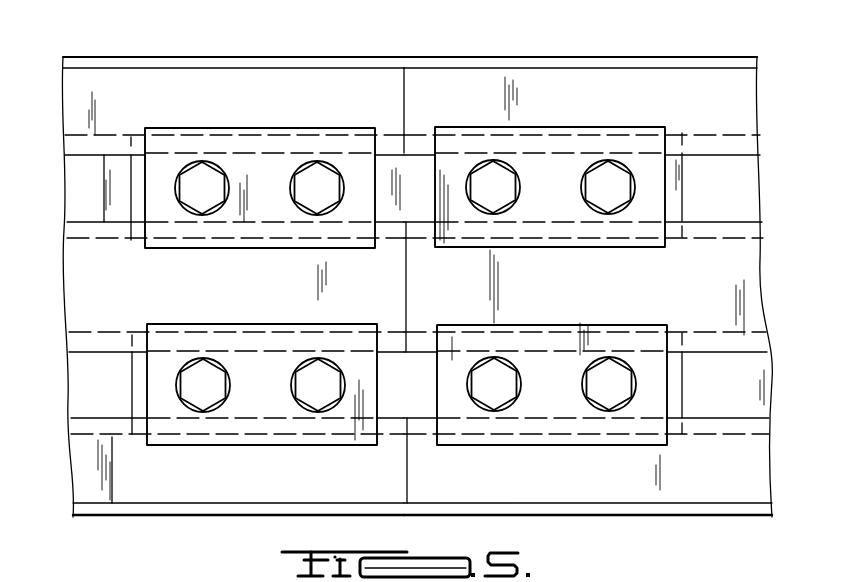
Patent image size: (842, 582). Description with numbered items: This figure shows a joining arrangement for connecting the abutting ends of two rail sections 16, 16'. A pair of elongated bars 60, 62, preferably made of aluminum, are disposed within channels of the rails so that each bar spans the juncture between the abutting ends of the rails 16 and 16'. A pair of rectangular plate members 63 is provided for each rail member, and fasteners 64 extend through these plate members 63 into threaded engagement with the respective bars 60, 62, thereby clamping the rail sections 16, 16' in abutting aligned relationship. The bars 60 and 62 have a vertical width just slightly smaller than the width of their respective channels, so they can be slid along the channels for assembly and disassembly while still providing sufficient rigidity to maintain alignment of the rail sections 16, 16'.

The rail 16 is at (233, 266).
The rail 16' is at (588, 266).
The elongated bar 60 is at (413, 167).
The elongated bar 62 is at (417, 407).
The rectangular plate member 63 is at (252, 358).
The fastener 64 is at (308, 176).